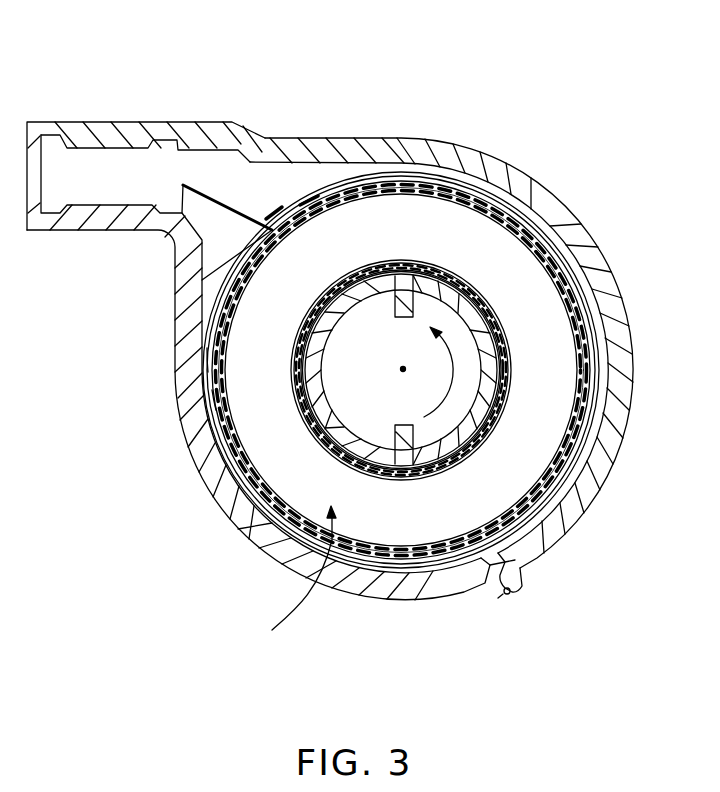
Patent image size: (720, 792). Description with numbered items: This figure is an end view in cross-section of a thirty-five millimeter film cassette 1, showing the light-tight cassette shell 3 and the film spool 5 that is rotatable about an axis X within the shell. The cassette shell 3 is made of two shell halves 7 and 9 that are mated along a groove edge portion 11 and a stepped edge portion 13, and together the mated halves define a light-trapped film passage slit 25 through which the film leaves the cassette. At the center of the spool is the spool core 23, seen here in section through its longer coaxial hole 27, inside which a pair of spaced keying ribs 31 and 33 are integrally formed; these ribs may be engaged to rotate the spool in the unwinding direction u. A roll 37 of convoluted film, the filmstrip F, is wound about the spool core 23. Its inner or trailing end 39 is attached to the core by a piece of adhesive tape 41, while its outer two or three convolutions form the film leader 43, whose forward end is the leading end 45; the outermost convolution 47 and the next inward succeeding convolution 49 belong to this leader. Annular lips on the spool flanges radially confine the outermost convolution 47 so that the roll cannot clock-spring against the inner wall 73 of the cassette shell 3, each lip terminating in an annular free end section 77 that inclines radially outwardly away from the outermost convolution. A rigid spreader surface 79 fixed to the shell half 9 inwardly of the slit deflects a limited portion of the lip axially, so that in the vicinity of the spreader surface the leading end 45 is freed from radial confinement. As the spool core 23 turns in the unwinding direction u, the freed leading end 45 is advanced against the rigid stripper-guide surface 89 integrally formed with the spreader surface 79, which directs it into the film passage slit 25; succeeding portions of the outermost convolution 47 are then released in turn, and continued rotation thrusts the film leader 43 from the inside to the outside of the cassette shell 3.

The film cassette 1 is at (182, 100).
The cassette shell 3 is at (598, 515).
The film spool 5 is at (628, 398).
The shell half 7 is at (365, 137).
The shell half 9 is at (413, 602).
The groove edge portion 11 is at (508, 592).
The stepped edge portion 13 is at (508, 572).
The spool core 23 is at (504, 384).
The film passage slit 25 is at (78, 182).
The longer coaxial hole 27 is at (470, 340).
The keying rib 31 is at (392, 303).
The keying rib 33 is at (398, 432).
The film roll 37 is at (232, 484).
The inner end 39 is at (298, 398).
The adhesive tape 41 is at (298, 380).
The film leader 43 is at (316, 192).
The leading end 45 is at (268, 213).
The outermost convolution 47 is at (525, 232).
The next inward succeeding convolution 49 is at (543, 258).
The inner wall 73 is at (212, 392).
The annular free end section 77 is at (209, 356).
The spreader surface 79 is at (222, 237).
The stripper-guide surface 89 is at (216, 200).
The filmstrip F is at (296, 581).
The unwinding direction u is at (432, 338).
The axis X is at (403, 369).